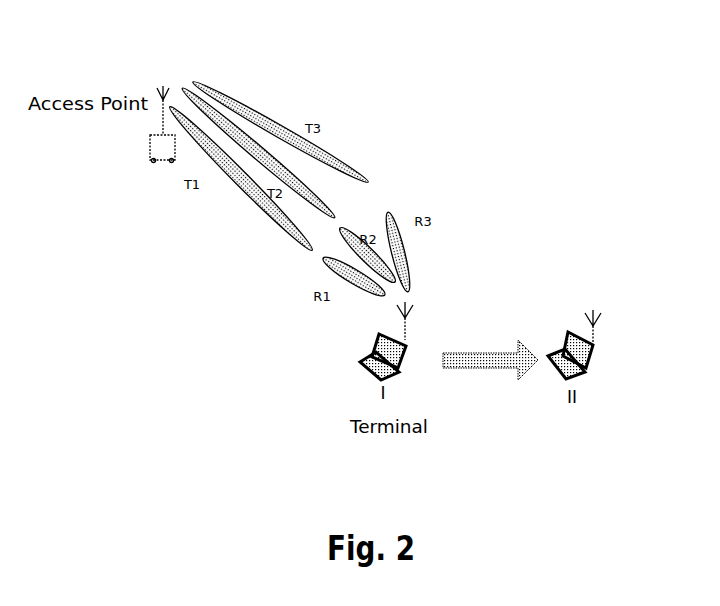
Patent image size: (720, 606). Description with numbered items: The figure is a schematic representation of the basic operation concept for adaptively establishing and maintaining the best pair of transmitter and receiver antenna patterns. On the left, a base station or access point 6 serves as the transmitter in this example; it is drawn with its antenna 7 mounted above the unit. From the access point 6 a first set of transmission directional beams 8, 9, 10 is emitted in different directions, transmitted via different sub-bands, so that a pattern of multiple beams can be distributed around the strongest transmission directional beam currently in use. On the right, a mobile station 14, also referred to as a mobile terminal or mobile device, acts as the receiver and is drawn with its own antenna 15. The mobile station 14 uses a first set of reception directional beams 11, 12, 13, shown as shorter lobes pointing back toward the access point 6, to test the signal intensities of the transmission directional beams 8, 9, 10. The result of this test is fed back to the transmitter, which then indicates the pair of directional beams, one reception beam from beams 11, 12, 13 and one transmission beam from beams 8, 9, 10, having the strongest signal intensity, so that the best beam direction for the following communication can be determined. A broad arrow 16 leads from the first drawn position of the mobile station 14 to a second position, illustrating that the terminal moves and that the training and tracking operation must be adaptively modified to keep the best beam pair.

The access point 6 is at (157, 148).
The access point antenna 7 is at (153, 96).
The transmission directional beam 8 is at (235, 172).
The transmission directional beam 9 is at (230, 125).
The transmission directional beam 10 is at (220, 97).
The reception directional beam 11 is at (367, 283).
The reception directional beam 12 is at (380, 267).
The reception directional beam 13 is at (400, 245).
The mobile station 14 is at (367, 370).
The terminal antenna 15 is at (408, 333).
The movement arrow 16 is at (478, 365).